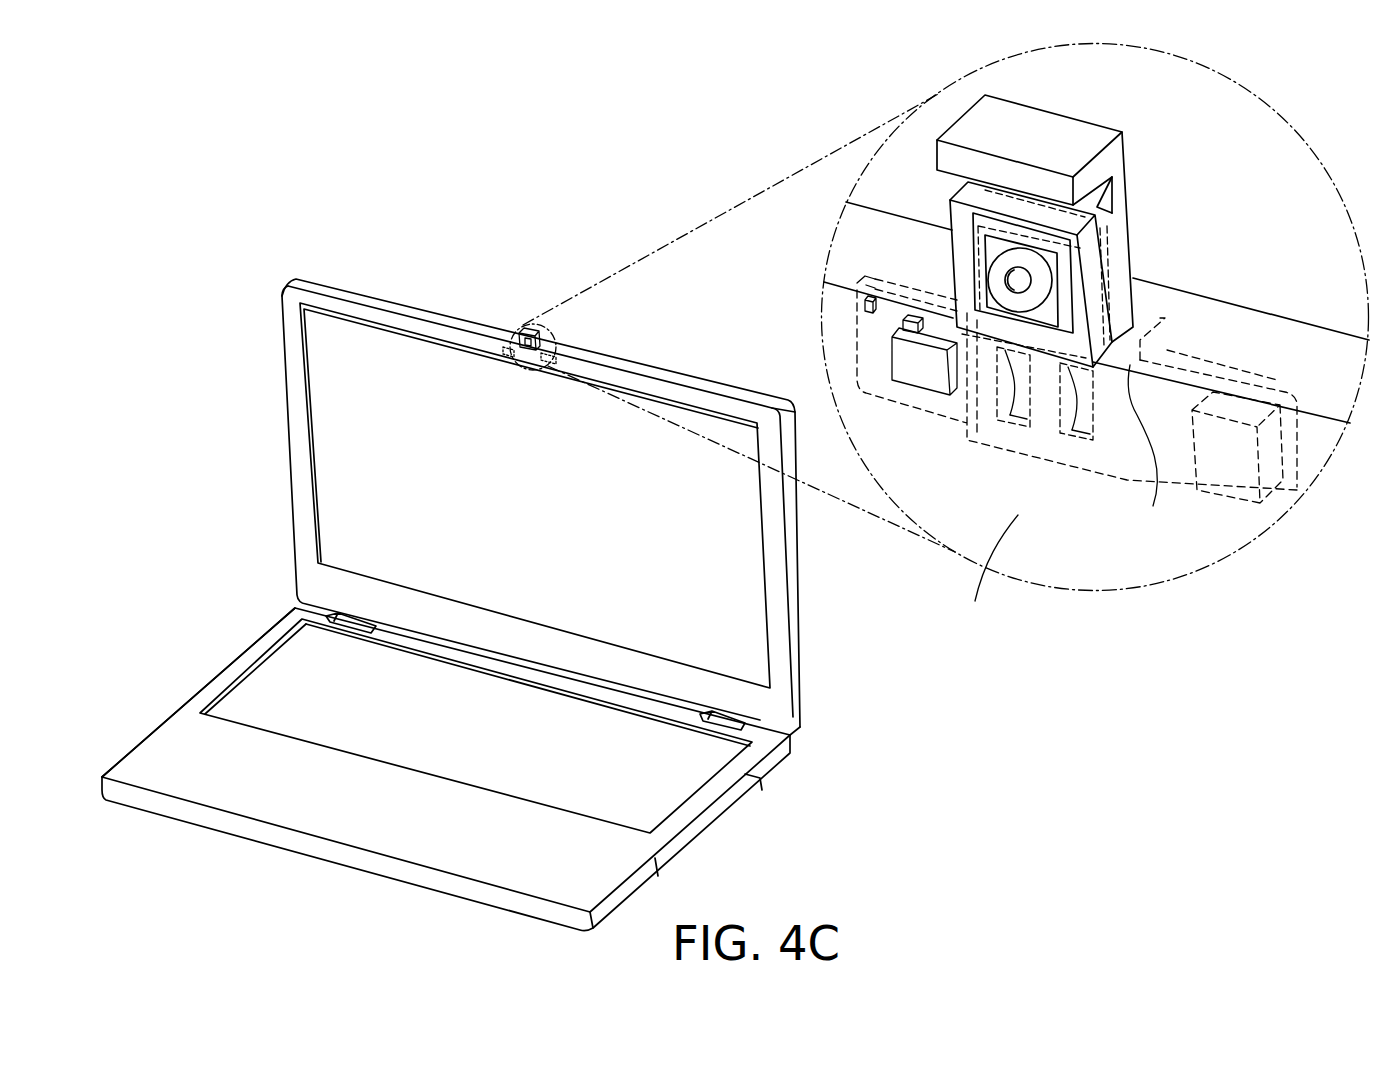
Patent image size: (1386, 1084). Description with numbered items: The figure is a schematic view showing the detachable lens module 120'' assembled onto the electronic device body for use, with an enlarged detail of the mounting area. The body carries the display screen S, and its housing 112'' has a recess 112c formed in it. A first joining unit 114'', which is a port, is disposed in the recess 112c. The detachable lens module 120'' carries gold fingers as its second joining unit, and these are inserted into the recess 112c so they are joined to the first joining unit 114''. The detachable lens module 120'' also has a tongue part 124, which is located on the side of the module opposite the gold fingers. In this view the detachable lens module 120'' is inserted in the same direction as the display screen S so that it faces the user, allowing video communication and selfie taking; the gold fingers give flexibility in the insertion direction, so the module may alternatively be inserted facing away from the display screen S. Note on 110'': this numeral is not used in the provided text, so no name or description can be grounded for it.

The display module 110'' is at (794, 464).
The housing 112'' is at (1096, 312).
The recess 112c is at (1170, 324).
The first joining unit 114'' is at (1088, 445).
The detachable lens module 120'' is at (927, 317).
The tongue part 124 is at (1098, 207).
The display screen S is at (341, 443).